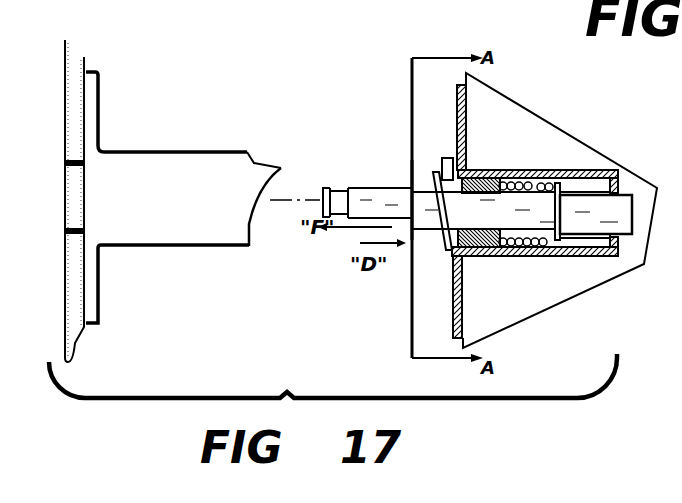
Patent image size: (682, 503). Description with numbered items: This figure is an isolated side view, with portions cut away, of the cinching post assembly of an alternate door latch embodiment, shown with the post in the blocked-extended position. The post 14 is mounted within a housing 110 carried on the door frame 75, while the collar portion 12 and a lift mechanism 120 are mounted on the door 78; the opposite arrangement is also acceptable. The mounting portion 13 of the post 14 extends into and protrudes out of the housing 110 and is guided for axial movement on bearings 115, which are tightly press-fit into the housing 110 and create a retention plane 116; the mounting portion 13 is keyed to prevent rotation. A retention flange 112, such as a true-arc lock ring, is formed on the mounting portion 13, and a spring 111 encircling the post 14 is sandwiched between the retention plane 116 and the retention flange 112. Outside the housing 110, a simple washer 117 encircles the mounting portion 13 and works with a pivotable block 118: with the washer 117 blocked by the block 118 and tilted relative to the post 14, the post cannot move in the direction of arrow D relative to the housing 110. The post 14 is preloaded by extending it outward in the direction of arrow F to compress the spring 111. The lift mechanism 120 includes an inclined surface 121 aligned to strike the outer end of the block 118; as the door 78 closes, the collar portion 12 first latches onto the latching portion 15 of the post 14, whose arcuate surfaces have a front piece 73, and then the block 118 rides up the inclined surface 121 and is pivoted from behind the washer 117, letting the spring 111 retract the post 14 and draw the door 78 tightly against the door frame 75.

The collar portion 12 is at (128, 146).
The mounting portion 13 is at (495, 219).
The post 14 is at (414, 172).
The latching portion 15 is at (371, 200).
The front piece 73 is at (323, 189).
The door frame 75 is at (573, 303).
The door 78 is at (83, 63).
The housing 110 is at (573, 168).
The spring 111 is at (534, 180).
The retention flange 112 is at (567, 173).
The bearings 115 is at (488, 177).
The retention plane 116 is at (510, 175).
The washer 117 is at (404, 172).
The pivotable block 118 is at (452, 176).
The lift mechanism 120 is at (284, 166).
The inclined surface 121 is at (263, 165).